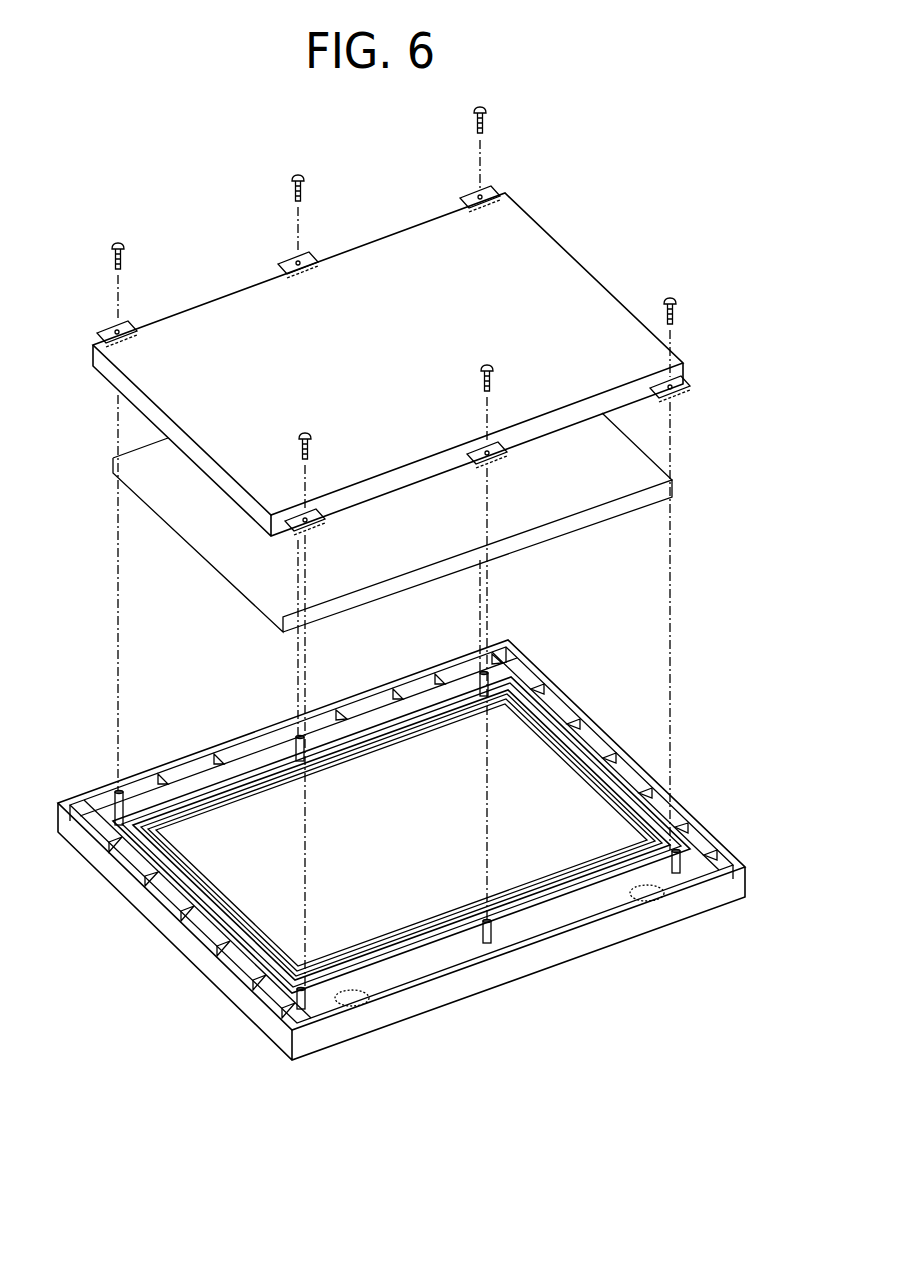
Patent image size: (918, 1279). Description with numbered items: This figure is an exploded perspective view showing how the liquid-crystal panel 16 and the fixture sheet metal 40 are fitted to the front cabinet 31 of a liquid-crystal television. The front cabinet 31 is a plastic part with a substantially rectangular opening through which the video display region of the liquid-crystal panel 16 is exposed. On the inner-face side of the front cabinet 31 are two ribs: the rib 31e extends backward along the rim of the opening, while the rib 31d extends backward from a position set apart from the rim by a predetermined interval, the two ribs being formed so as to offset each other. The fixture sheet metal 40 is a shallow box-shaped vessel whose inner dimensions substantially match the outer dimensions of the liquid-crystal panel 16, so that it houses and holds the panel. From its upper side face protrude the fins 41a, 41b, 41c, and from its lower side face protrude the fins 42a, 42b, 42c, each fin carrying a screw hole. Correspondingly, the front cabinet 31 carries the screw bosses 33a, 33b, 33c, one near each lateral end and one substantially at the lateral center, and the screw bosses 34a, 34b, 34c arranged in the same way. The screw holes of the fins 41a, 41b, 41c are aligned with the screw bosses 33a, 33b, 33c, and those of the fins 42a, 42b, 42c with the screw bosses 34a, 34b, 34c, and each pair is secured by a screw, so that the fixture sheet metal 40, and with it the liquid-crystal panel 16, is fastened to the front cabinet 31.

The liquid-crystal panel 16 is at (208, 563).
The front cabinet 31 is at (130, 890).
The rib 31d is at (233, 938).
The rib 31e is at (175, 927).
The screw boss 33a is at (120, 790).
The screw boss 33b is at (267, 735).
The screw boss 33c is at (452, 667).
The screw boss 34a is at (317, 999).
The screw boss 34b is at (500, 934).
The screw boss 34c is at (681, 866).
The fixture sheet metal 40 is at (222, 310).
The fin 41a is at (130, 323).
The fin 41b is at (310, 255).
The fin 41c is at (490, 187).
The fin 42a is at (318, 527).
The fin 42b is at (505, 458).
The fin 42c is at (683, 398).